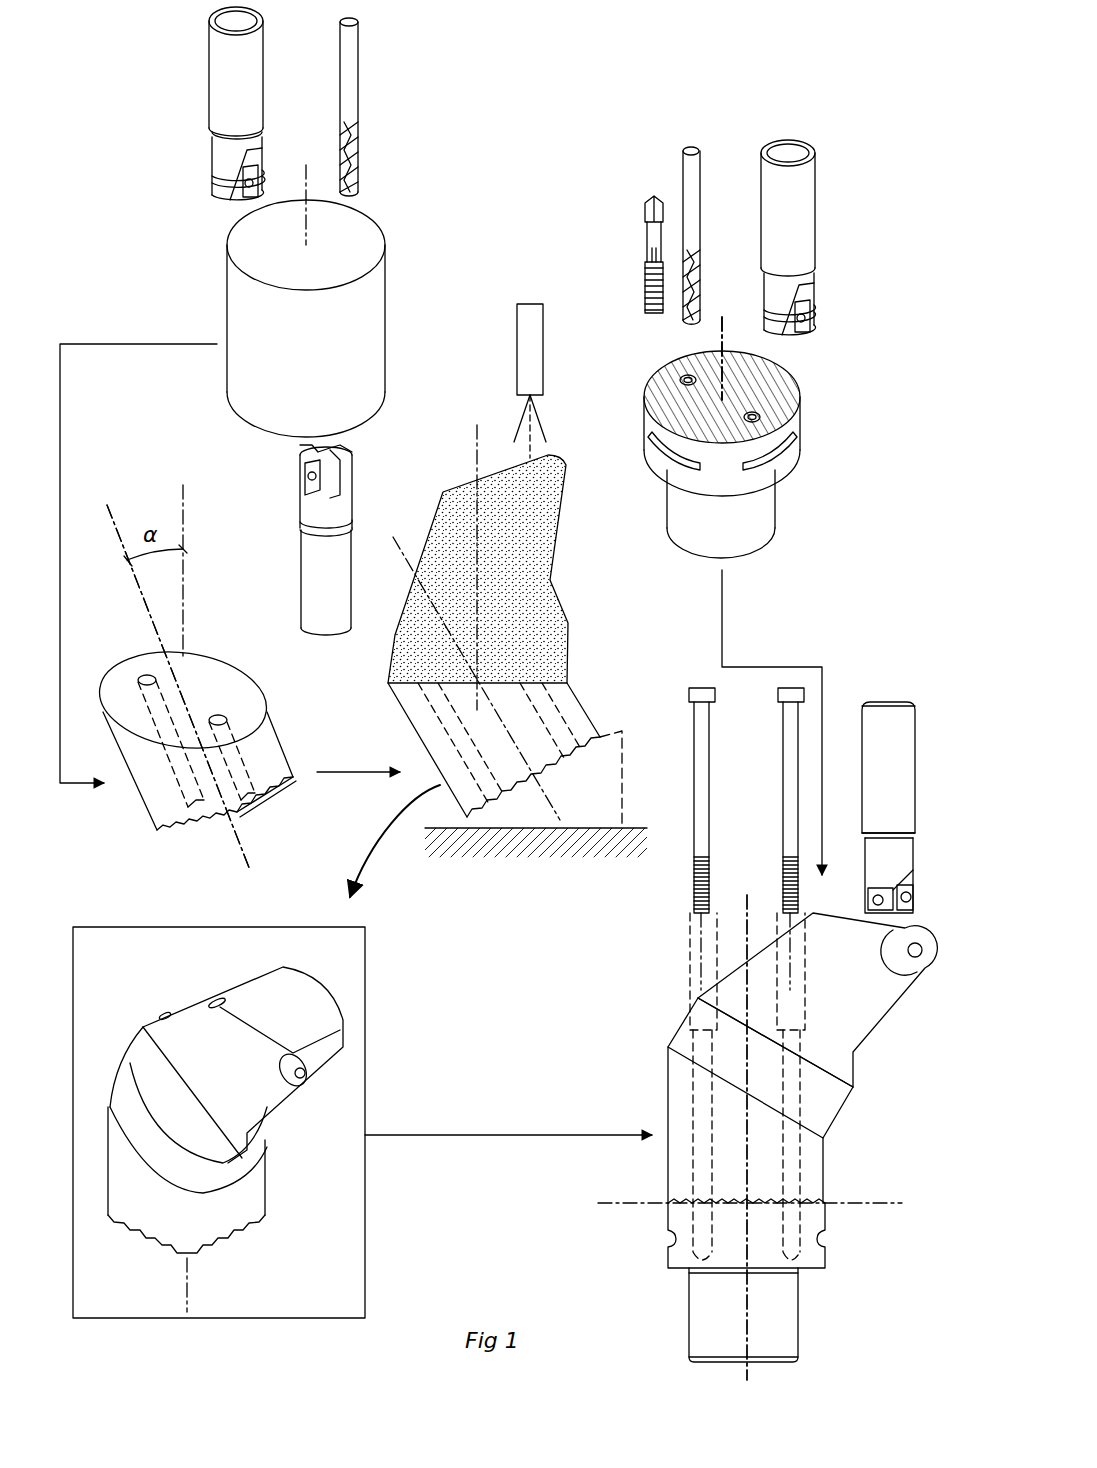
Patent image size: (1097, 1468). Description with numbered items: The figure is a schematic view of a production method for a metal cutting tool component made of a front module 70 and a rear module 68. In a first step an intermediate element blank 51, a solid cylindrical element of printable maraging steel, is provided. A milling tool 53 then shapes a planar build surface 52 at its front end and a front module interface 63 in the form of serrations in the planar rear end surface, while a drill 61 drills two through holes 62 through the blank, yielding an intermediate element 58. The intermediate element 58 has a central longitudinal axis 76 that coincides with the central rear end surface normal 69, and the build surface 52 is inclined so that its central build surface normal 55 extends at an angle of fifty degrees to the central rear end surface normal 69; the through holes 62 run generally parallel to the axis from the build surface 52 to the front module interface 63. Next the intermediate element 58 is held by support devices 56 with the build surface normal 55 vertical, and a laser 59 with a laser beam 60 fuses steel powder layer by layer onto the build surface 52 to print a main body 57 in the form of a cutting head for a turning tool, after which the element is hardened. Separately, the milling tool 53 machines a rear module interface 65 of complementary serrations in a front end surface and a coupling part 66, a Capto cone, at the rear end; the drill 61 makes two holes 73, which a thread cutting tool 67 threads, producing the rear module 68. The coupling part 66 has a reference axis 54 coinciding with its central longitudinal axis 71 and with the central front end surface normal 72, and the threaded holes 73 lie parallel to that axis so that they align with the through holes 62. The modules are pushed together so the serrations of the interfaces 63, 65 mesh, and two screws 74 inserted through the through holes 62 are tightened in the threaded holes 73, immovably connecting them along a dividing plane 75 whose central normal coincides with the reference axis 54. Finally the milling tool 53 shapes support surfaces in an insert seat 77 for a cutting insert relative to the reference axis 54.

The intermediate element blank 51 is at (378, 333).
The build surface 52 is at (205, 660).
The milling tool 53 is at (222, 106).
The reference axis 54 is at (722, 347).
The central build surface normal 55 is at (180, 503).
The support devices 56 is at (608, 760).
The main body 57 is at (543, 567).
The intermediate element 58 is at (568, 698).
The laser 59 is at (533, 347).
The laser beam 60 is at (518, 423).
The drill 61 is at (352, 82).
The through holes 62 is at (145, 672).
The front module interface 63 is at (250, 800).
The rear module interface 65 is at (663, 390).
The coupling part 66 is at (685, 527).
The thread cutting tool 67 is at (645, 222).
The rear module 68 is at (800, 428).
The central rear end surface normal 69 is at (161, 660).
The front module 70 is at (835, 1100).
The central longitudinal axis of the rear coupling part 71 is at (738, 807).
The central front end surface normal 72 is at (728, 330).
The threaded holes 73 is at (688, 375).
The screws 74 is at (790, 758).
The dividing plane 75 is at (612, 1203).
The central longitudinal axis of the intermediate element 76 is at (112, 535).
The insert seat 77 is at (917, 962).